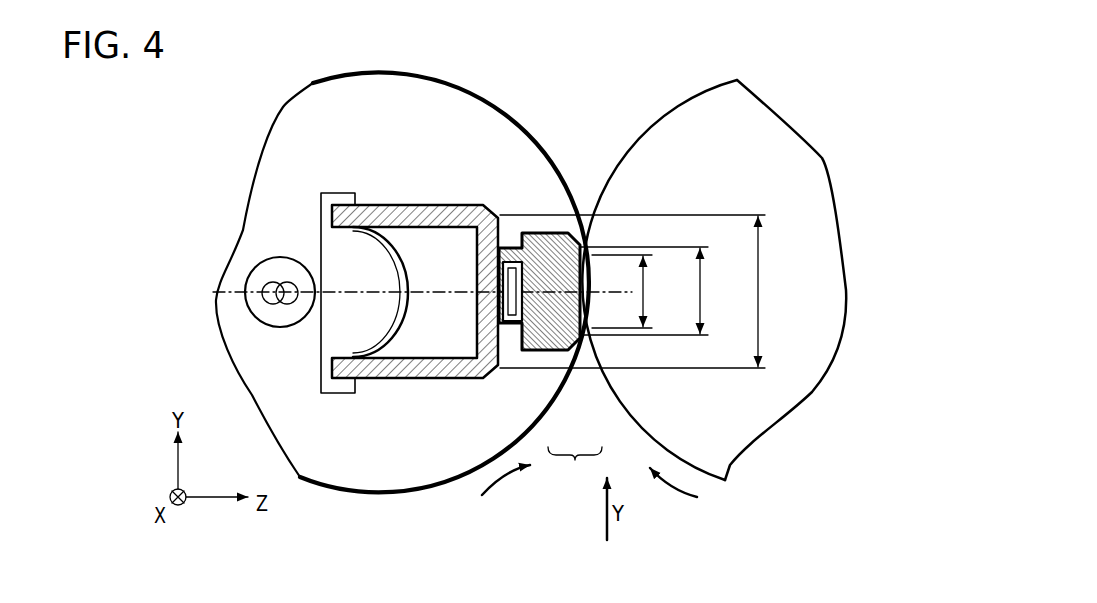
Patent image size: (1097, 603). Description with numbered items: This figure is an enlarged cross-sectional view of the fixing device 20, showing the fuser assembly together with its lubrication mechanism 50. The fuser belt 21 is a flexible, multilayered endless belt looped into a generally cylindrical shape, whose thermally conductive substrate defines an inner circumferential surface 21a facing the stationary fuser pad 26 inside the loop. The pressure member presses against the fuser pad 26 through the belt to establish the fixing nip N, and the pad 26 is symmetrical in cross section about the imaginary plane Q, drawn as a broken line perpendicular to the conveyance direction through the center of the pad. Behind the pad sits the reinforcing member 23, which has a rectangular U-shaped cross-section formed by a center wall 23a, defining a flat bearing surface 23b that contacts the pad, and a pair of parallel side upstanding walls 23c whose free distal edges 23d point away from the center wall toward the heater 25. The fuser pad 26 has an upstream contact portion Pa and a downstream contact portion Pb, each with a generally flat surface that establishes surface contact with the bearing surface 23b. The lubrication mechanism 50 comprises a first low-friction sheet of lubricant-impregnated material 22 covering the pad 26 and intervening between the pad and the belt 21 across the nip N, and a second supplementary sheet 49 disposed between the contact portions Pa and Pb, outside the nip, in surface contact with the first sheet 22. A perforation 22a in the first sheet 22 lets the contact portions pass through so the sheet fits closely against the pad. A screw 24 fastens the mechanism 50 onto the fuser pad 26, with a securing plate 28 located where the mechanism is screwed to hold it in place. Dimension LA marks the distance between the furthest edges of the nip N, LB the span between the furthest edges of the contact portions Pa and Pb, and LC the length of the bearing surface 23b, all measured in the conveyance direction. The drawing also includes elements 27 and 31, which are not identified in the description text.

The fixing device 20 is at (714, 255).
The fuser belt 21 is at (402, 260).
The inner circumferential surface 21a is at (442, 88).
The first sheet of lubricant-impregnated material 22 is at (565, 352).
The perforation 22a is at (545, 240).
The reinforcing member 23 is at (386, 198).
The center wall 23a is at (503, 290).
The bearing surface 23b is at (502, 296).
The side upstanding walls 23c is at (440, 210).
The distal edge 23d is at (328, 208).
The screw 24 is at (503, 312).
The heater 25 is at (245, 292).
The fuser pad 26 is at (560, 240).
The clip 27 is at (340, 394).
The securing plate 28 is at (502, 277).
The inner wall of second housing 31 is at (680, 110).
The second sheet of lubricant-impregnated material 49 is at (540, 352).
The lubrication mechanism 50 is at (575, 466).
The imaginary plane Q is at (356, 286).
The fixing nip N is at (590, 290).
The upstream contact portion Pa is at (504, 366).
The downstream contact portion Pb is at (513, 248).
The nip length LA is at (631, 291).
The contact portion span LB is at (654, 291).
The bearing surface length LC is at (643, 291).